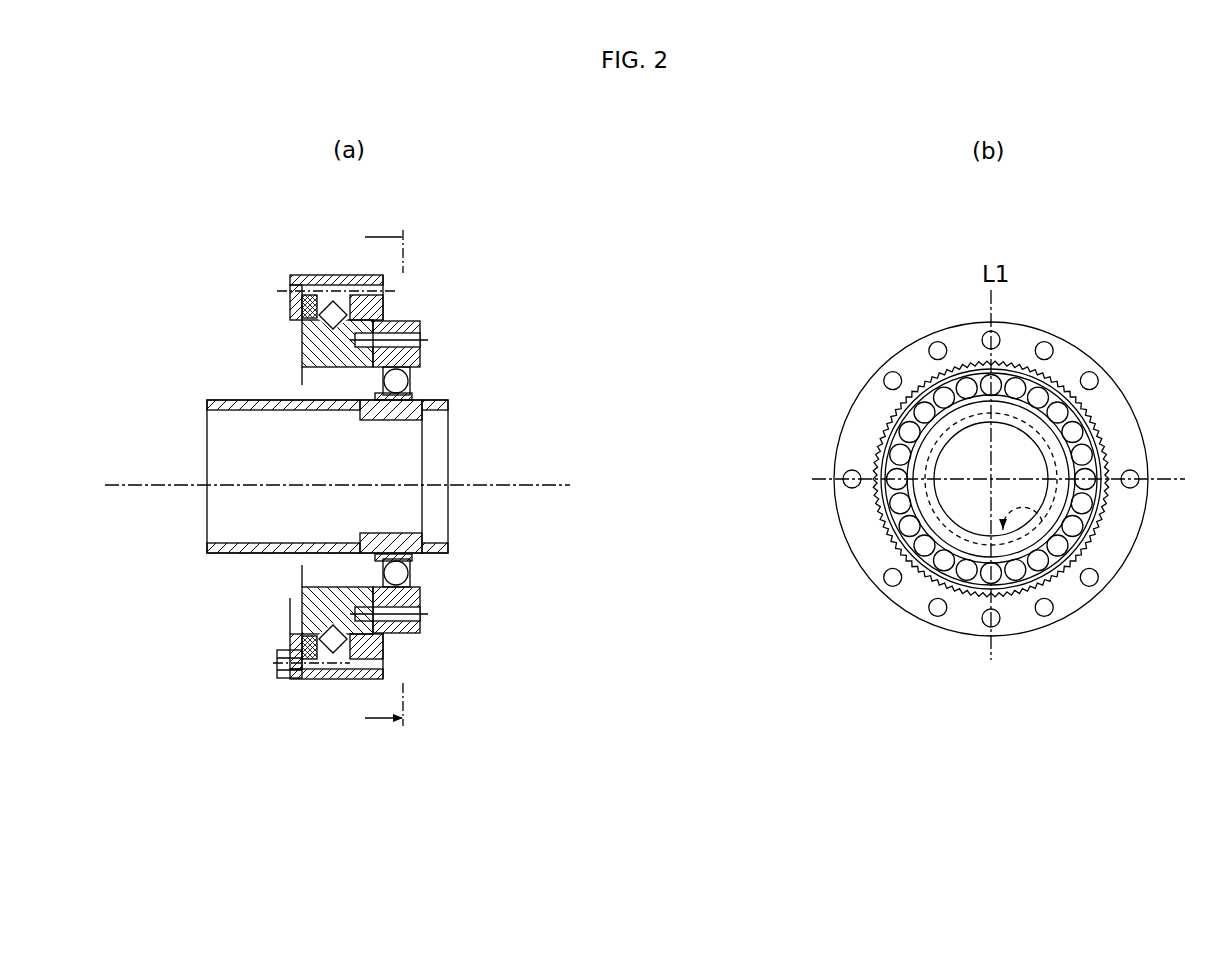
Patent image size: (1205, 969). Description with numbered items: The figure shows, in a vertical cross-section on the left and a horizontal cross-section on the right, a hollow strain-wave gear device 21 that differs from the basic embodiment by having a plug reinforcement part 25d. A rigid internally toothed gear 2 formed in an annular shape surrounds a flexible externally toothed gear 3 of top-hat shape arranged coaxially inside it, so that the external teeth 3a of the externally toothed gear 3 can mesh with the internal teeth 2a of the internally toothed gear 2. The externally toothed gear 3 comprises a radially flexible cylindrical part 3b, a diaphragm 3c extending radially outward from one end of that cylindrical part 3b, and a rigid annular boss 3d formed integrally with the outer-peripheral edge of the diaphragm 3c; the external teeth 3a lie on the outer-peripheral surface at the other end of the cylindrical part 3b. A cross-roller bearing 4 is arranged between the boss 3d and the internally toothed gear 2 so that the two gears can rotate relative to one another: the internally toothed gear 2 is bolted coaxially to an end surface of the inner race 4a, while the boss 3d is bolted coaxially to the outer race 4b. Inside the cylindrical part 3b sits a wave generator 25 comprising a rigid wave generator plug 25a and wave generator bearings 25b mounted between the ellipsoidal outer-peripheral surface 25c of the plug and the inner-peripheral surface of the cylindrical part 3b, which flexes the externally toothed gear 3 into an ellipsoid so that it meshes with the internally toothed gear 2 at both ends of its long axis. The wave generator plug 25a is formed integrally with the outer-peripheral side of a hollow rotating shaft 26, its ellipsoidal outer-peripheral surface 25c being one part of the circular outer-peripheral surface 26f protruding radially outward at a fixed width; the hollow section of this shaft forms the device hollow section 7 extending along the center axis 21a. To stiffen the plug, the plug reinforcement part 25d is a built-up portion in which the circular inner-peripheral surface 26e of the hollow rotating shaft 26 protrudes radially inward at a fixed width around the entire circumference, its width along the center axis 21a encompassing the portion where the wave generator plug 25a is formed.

The rigid internally toothed gear 2 is at (425, 348).
The internal teeth 2a is at (416, 380).
The flexible externally toothed gear 3 is at (300, 362).
The external teeth 3a is at (414, 322).
The cylindrical part 3b is at (331, 368).
The diaphragm 3c is at (305, 345).
The rigid boss 3d is at (293, 306).
The cross-roller bearing 4 is at (300, 298).
The inner race 4a is at (352, 312).
The outer race 4b is at (325, 298).
The device hollow section 7 is at (264, 520).
The hollow strain-wave gear device 21 is at (482, 306).
The center axis 21a is at (521, 484).
The wave generator 25 is at (419, 393).
The wave generator plug 25a is at (413, 557).
The wave generator bearing 25b is at (424, 578).
The ellipsoidal outer-peripheral surface 25c is at (417, 574).
The plug reinforcement part 25d is at (386, 534).
The hollow rotating shaft 26 is at (204, 407).
The circular inner-peripheral surface 26e is at (237, 543).
The circular outer-peripheral surface 26f is at (213, 556).